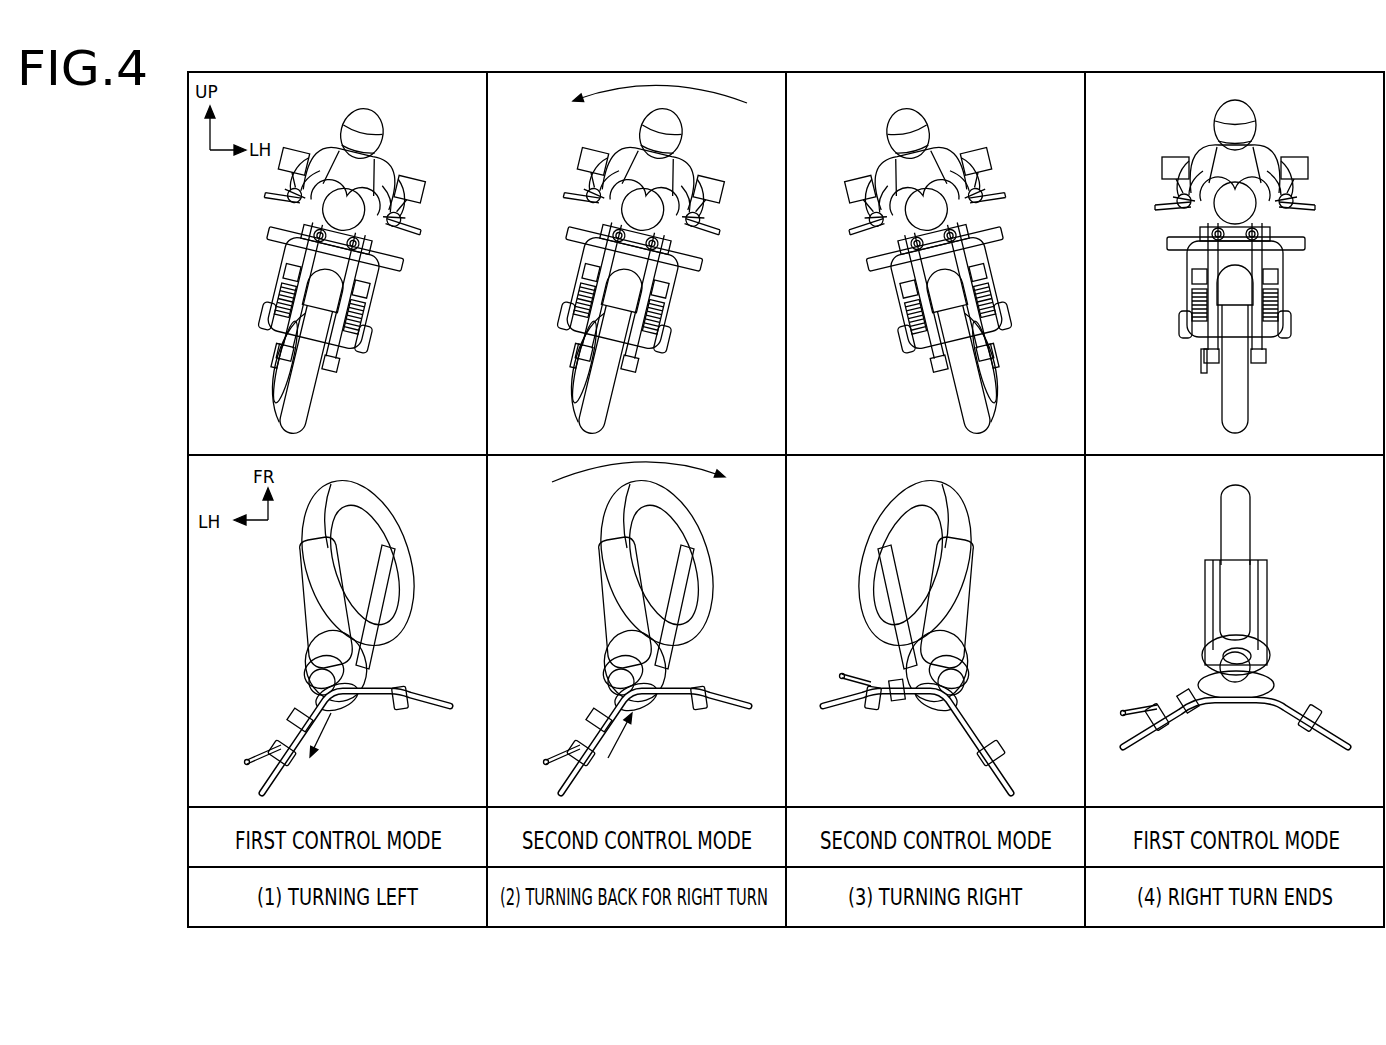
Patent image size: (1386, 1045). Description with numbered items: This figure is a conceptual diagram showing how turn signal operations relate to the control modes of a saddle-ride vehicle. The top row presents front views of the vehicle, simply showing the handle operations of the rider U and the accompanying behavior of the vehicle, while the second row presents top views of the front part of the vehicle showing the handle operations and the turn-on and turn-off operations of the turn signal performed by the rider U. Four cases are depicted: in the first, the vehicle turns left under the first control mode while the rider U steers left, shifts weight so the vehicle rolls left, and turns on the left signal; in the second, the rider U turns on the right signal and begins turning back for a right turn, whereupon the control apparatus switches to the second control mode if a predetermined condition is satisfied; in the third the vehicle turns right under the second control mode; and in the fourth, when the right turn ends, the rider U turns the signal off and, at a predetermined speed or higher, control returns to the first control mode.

The rider U is at (407, 133).